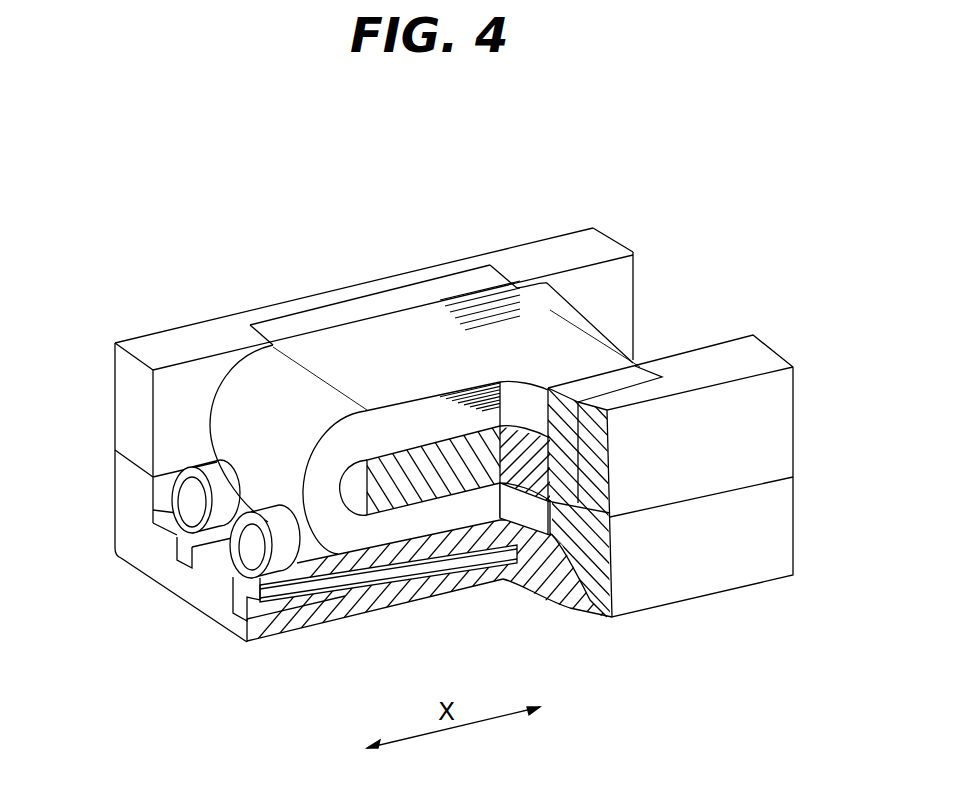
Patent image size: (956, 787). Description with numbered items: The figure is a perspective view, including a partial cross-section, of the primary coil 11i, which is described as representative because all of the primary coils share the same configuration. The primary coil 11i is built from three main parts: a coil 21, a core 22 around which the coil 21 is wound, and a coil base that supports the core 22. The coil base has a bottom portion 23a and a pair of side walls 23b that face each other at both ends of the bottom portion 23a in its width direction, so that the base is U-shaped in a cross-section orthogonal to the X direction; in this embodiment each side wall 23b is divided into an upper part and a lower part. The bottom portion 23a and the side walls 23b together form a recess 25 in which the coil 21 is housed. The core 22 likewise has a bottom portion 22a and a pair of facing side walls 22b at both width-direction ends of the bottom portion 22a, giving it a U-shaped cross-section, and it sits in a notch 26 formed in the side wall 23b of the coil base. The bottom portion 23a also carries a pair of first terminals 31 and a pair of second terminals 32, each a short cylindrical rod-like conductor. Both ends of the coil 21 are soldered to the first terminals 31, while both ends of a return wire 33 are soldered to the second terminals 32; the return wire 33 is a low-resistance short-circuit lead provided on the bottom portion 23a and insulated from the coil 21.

The primary coil 11i is at (361, 268).
The coil 21 is at (527, 327).
The core 22 is at (323, 317).
The bottom portion 22a is at (453, 477).
The side walls 22b is at (443, 288).
The bottom portion 23a is at (193, 595).
The side walls 23b is at (125, 407).
The recess 25 is at (618, 292).
The notch 26 is at (607, 465).
The first terminals 31 is at (190, 507).
The second terminals 32 is at (247, 557).
The return wire 33 is at (353, 597).